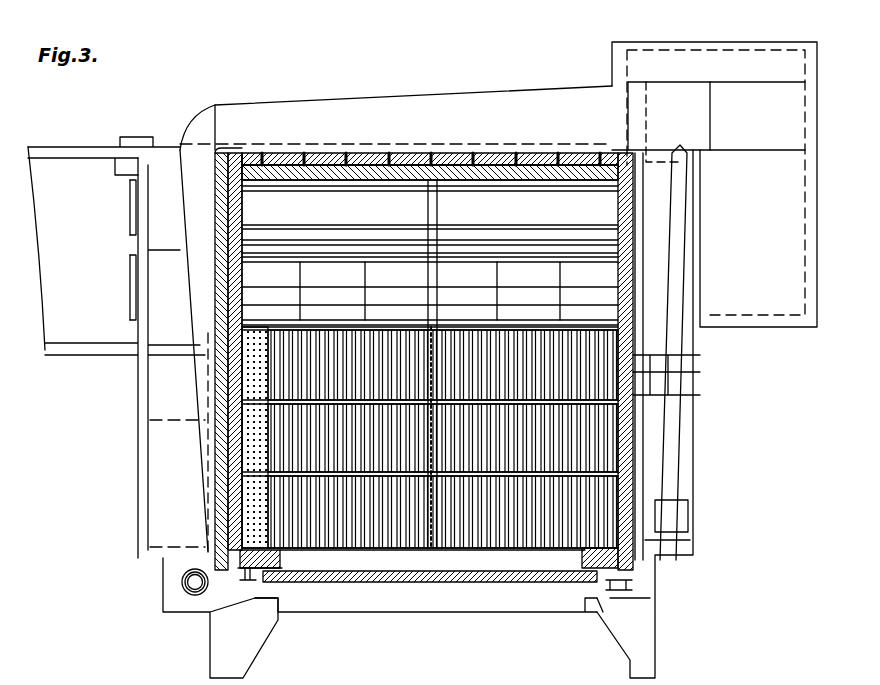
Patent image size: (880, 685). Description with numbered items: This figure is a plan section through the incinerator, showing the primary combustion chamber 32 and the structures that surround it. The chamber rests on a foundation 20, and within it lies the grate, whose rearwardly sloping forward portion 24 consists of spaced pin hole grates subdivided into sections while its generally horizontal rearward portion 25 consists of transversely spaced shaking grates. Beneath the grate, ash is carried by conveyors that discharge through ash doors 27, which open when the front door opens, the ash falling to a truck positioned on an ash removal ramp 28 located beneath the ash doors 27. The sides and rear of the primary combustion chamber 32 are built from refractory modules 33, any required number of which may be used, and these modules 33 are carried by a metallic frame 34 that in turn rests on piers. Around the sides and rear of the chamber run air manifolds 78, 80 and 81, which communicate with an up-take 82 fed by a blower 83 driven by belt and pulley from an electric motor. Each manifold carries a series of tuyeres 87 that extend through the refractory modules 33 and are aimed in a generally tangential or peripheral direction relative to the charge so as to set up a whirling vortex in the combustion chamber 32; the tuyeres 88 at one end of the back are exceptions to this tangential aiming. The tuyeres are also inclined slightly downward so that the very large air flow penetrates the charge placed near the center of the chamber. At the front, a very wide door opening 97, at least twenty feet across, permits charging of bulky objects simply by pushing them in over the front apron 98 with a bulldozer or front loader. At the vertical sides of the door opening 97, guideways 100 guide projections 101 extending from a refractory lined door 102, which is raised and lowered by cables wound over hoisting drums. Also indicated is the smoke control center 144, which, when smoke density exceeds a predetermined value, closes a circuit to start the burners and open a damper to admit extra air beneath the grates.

The foundation 20 is at (228, 600).
The forward portion 24 is at (432, 550).
The rearward portion 25 is at (600, 280).
The ash doors 27 is at (130, 218).
The ash removal ramp 28 is at (110, 296).
The primary combustion chamber 32 is at (262, 373).
The modules 33 is at (625, 498).
The metallic frame 34 is at (235, 290).
The air manifold 78 is at (205, 450).
The air manifold 80 is at (396, 319).
The air manifold 81 is at (660, 430).
The up-take 82 is at (668, 118).
The blower 83 is at (714, 184).
The tuyeres 87 is at (480, 160).
The tuyeres 88 is at (258, 160).
The door opening 97 is at (432, 558).
The front apron 98 is at (474, 600).
The guideways 100 is at (635, 588).
The projections 101 is at (603, 600).
The refractory lined door 102 is at (503, 575).
The smoke control center 144 is at (688, 517).